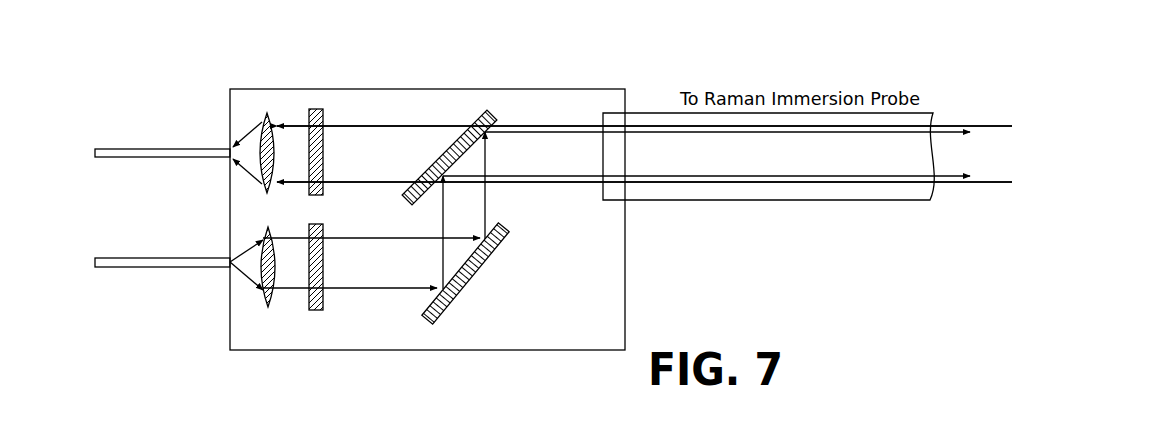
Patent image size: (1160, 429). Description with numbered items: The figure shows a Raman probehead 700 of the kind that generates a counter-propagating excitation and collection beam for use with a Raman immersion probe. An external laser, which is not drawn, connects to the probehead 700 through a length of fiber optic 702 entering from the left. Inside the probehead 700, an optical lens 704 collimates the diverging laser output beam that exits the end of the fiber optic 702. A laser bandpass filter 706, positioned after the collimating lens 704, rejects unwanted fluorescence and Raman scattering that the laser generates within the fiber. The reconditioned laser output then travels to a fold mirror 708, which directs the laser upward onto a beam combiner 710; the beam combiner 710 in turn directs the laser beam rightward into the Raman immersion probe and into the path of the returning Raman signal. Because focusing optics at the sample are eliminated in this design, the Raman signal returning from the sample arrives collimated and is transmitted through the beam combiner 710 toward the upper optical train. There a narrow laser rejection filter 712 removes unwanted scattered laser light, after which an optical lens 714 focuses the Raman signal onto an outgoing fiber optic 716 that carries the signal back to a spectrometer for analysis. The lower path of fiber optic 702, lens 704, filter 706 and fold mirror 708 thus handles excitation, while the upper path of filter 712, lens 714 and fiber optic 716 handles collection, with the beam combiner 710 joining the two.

The probehead 700 is at (594, 296).
The fiber optic 702 is at (138, 267).
The optical lens 704 is at (275, 268).
The laser bandpass filter 706 is at (326, 268).
The fold mirror 708 is at (473, 275).
The beam combiner 710 is at (458, 137).
The narrow laser rejection filter 712 is at (325, 152).
The optical lens 714 is at (272, 153).
The outgoing fiber optic 716 is at (152, 148).